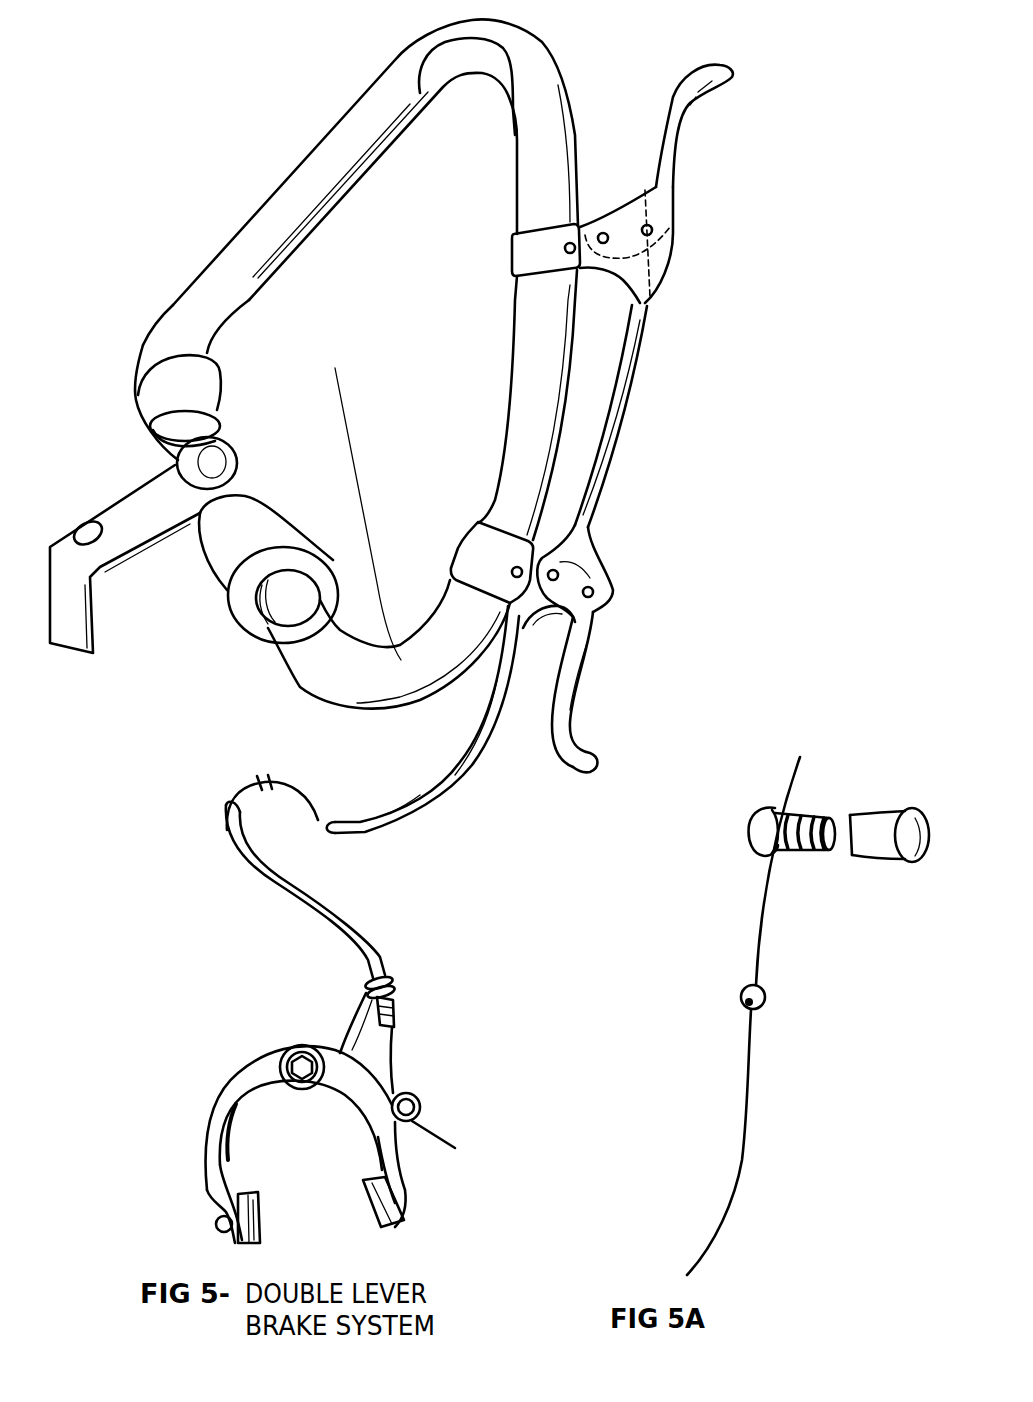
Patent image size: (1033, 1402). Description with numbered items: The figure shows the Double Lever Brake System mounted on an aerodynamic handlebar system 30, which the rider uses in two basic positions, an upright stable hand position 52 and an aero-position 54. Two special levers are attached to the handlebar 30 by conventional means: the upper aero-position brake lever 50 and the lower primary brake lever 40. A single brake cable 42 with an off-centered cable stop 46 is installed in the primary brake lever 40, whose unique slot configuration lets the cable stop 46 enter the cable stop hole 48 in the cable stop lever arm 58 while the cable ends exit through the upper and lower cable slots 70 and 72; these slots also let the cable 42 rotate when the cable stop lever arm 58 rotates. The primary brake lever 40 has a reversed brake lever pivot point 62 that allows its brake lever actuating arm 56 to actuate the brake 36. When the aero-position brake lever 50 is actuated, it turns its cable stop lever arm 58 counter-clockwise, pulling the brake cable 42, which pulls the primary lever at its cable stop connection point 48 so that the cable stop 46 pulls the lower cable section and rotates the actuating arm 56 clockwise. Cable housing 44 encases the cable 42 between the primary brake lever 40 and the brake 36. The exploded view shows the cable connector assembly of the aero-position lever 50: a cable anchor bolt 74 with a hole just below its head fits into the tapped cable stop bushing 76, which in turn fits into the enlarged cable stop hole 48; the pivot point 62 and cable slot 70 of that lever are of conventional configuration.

In FIG. 5, the aerodynamic handlebar system 30 is at (225, 132).
In FIG. 5, the brake 36 is at (226, 1078).
In FIG. 5, the primary brake lever 40 is at (597, 638).
In FIG. 5, the brake cable 42 is at (258, 780).
In FIG. 5A, the brake cable 42 is at (750, 1125).
In FIG. 5, the cable housing 44 is at (445, 775).
In FIG. 5, the cable stop 46 is at (556, 574).
In FIG. 5A, the cable stop 46 is at (766, 1004).
In FIG. 5, the cable stop hole 48 is at (653, 229).
In FIG. 5, the aero-position brake lever 50 is at (763, 277).
In FIG. 5, the upright stable hand position 52 is at (215, 300).
In FIG. 5, the aero-position 54 is at (402, 53).
In FIG. 5, the brake lever actuating arm 56 is at (683, 110).
In FIG. 5, the cable stop lever arm 58 is at (675, 231).
In FIG. 5, the brake lever pivot point 62 is at (603, 232).
In FIG. 5, the upper cable slot 70 is at (585, 577).
In FIG. 5, the lower cable slot 72 is at (550, 620).
In FIG. 5, the cable anchor bolt 74 is at (647, 230).
In FIG. 5A, the cable anchor bolt 74 is at (813, 815).
In FIG. 5, the cable stop bushing 76 is at (647, 230).
In FIG. 5A, the cable stop bushing 76 is at (880, 862).